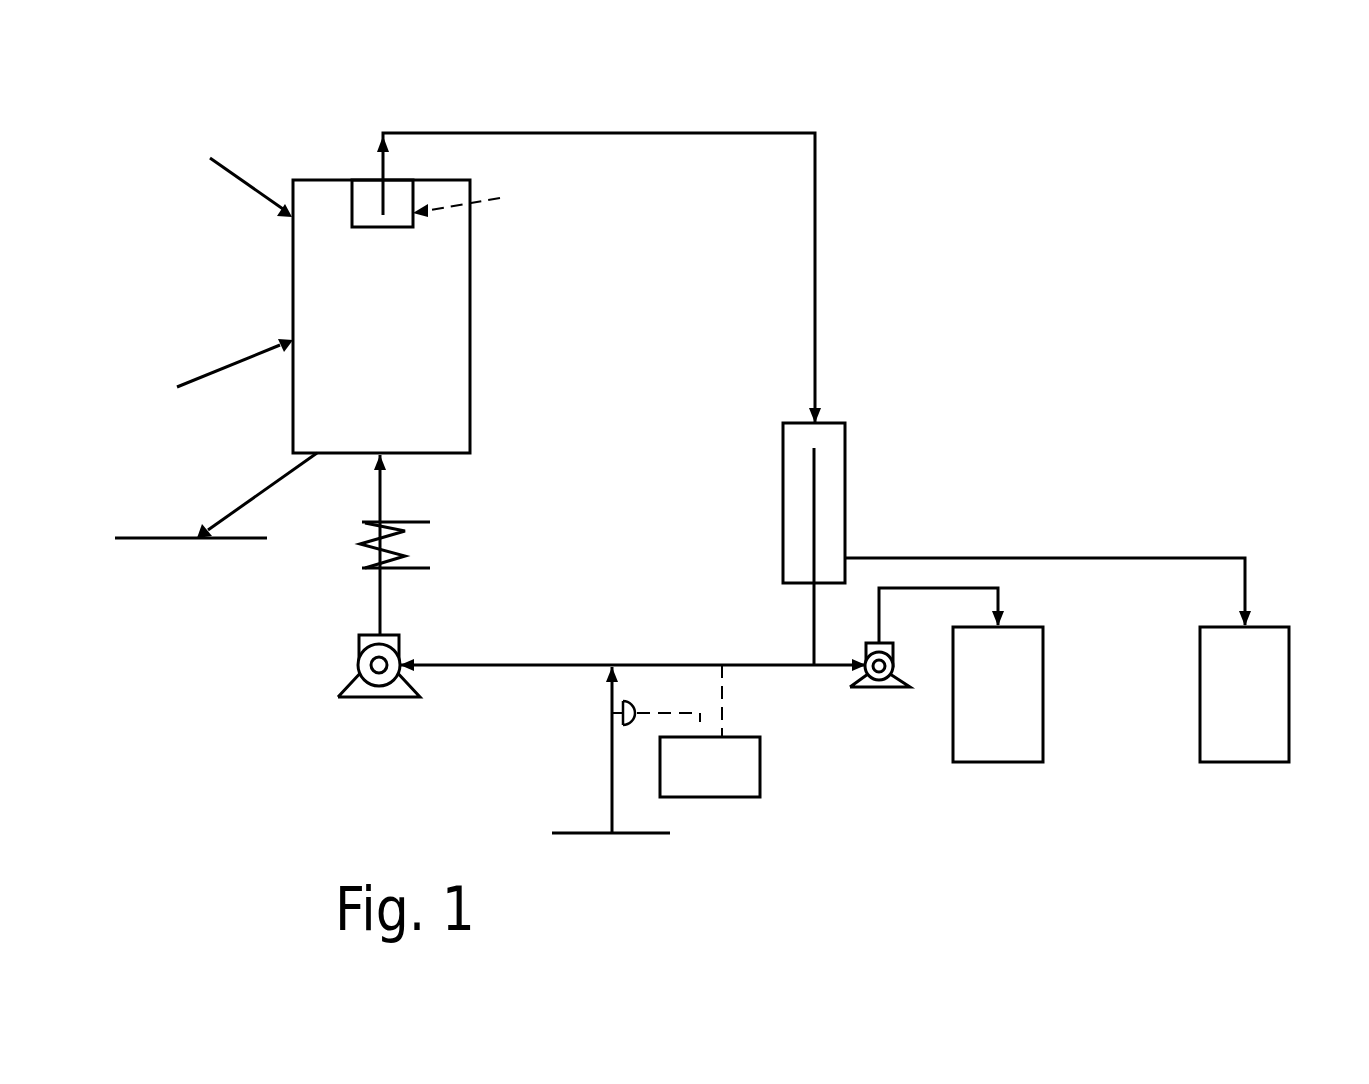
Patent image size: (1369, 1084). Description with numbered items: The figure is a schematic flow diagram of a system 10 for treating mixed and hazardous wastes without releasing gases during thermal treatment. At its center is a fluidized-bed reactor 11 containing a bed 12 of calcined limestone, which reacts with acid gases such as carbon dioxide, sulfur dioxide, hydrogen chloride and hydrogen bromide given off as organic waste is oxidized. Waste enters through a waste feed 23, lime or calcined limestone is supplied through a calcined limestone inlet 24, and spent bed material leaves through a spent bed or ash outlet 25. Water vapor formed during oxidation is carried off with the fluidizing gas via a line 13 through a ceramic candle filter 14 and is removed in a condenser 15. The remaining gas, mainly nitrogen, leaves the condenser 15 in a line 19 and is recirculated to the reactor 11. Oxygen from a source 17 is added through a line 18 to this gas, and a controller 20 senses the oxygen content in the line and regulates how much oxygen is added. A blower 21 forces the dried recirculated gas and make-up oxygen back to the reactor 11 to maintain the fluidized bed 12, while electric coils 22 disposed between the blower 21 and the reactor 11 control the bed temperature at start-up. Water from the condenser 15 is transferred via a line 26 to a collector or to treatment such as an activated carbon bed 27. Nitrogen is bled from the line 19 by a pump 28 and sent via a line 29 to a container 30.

The system 10 is at (173, 258).
The fluidized-bed reactor 11 is at (472, 313).
The bed 12 is at (380, 387).
The line 13 is at (377, 163).
The ceramic candle filter 14 is at (413, 195).
The condenser 15 is at (847, 450).
The source 17 is at (660, 855).
The line 18 is at (612, 762).
The line 19 is at (648, 665).
The controller 20 is at (760, 768).
The blower 21 is at (420, 689).
The electric coils 22 is at (415, 518).
The waste feed 23 is at (200, 378).
The calcined limestone inlet 24 is at (223, 168).
The spent bed or ash outlet 25 is at (268, 487).
The line 26 is at (960, 557).
The activated carbon bed 27 is at (1200, 690).
The pump 28 is at (875, 692).
The line 29 is at (903, 590).
The container 30 is at (1043, 693).